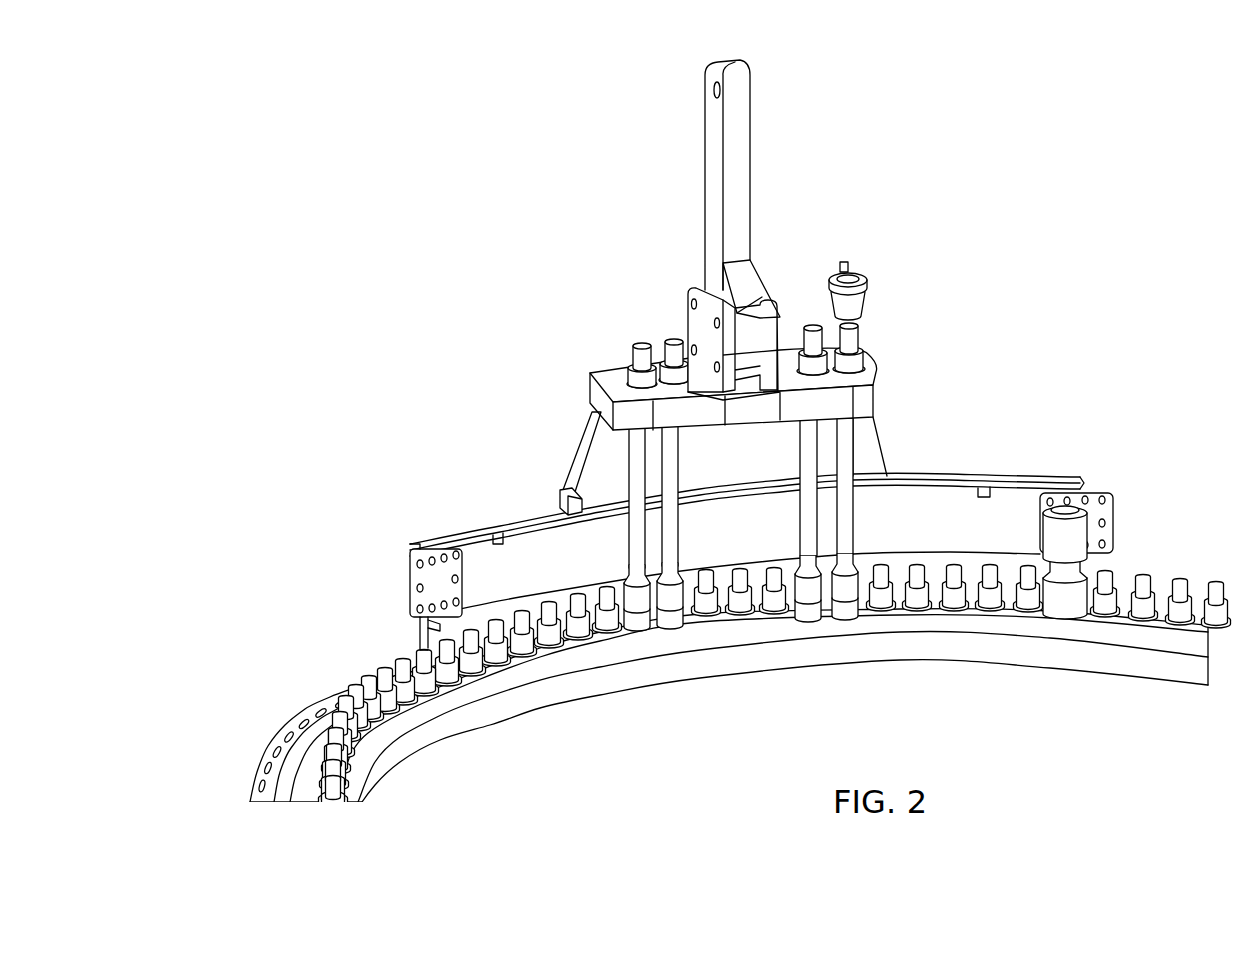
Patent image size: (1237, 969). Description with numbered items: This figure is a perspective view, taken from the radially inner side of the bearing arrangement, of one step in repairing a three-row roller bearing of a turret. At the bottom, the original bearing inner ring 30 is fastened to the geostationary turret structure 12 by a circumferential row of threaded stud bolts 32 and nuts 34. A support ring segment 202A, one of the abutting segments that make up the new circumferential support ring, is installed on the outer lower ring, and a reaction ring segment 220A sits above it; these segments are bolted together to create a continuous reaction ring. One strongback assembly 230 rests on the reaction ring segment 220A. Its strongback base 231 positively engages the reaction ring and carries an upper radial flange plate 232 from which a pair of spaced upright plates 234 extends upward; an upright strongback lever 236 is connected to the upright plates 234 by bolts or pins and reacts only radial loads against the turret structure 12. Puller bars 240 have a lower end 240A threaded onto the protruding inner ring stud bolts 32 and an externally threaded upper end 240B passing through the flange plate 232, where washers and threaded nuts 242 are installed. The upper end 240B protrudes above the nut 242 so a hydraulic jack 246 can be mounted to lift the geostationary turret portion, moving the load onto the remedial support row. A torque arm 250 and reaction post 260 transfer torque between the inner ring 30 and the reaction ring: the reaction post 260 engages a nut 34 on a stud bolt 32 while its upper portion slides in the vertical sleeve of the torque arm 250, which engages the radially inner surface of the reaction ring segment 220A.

The turret structure 12 is at (535, 693).
The bearing inner ring 30 is at (635, 650).
The stud bolts 32 is at (430, 680).
The nuts 34 is at (1032, 605).
The support ring segments 202A is at (422, 634).
The reaction ring segments 220A is at (480, 550).
The strongback assembly 230 is at (550, 488).
The strongback base 231 is at (588, 461).
The radial flange plate 232 is at (593, 397).
The upright plates 234 is at (692, 322).
The strongback lever 236 is at (708, 122).
The puller bars 240 is at (848, 458).
The lower end 240A is at (850, 580).
The upper end 240B is at (856, 342).
The threaded nuts 242 is at (642, 378).
The hydraulic jack 246 is at (866, 283).
The torque arm 250 is at (1076, 540).
The reaction post 260 is at (1090, 573).